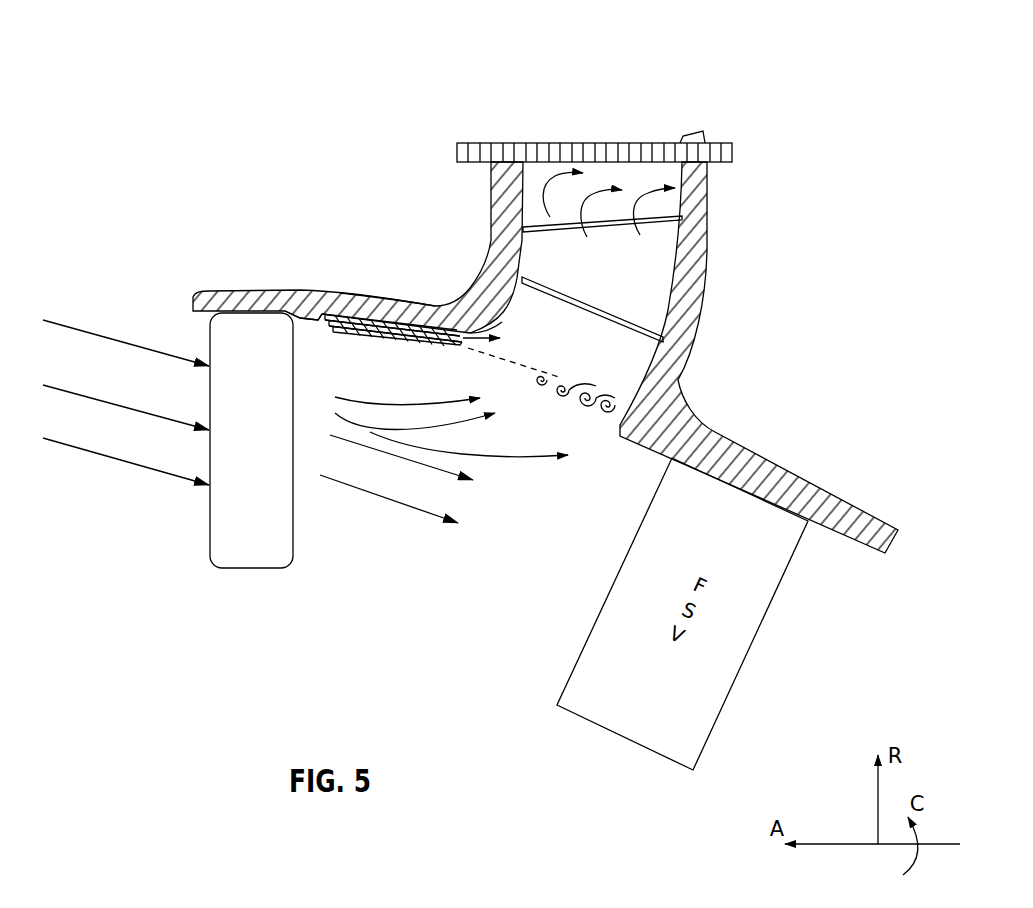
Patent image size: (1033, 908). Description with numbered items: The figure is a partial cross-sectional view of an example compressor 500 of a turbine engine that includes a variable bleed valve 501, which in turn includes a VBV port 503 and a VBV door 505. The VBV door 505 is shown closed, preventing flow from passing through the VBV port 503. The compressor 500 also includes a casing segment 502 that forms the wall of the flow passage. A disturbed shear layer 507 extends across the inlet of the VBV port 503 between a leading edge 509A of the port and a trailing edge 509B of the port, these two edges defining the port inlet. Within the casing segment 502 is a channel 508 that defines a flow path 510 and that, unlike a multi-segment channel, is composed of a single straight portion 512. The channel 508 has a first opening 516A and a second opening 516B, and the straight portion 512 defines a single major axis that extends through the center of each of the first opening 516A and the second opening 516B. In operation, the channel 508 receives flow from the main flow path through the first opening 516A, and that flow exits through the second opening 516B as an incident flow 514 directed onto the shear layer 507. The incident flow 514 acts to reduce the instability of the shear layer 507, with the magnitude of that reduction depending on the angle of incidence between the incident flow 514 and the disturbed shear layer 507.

The compressor 500 is at (195, 151).
The variable bleed valve 501 is at (545, 284).
The casing segment 502 is at (309, 290).
The VBV port 503 is at (763, 214).
The VBV door 505 is at (470, 141).
The disturbed shear layer 507 is at (560, 374).
The channel 508 is at (413, 343).
The leading edge 509A is at (456, 345).
The trailing edge 509B is at (621, 430).
The flow path 510 is at (437, 344).
The portion 512 is at (394, 304).
The incident flow 514 is at (502, 340).
The first opening 516A is at (319, 314).
The second opening 516B is at (477, 331).